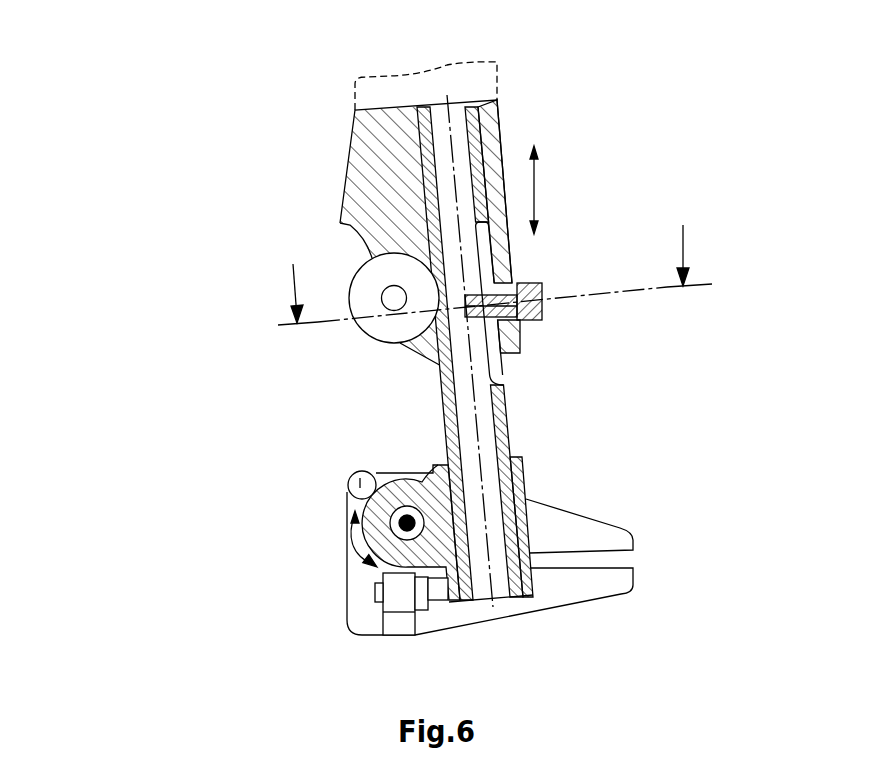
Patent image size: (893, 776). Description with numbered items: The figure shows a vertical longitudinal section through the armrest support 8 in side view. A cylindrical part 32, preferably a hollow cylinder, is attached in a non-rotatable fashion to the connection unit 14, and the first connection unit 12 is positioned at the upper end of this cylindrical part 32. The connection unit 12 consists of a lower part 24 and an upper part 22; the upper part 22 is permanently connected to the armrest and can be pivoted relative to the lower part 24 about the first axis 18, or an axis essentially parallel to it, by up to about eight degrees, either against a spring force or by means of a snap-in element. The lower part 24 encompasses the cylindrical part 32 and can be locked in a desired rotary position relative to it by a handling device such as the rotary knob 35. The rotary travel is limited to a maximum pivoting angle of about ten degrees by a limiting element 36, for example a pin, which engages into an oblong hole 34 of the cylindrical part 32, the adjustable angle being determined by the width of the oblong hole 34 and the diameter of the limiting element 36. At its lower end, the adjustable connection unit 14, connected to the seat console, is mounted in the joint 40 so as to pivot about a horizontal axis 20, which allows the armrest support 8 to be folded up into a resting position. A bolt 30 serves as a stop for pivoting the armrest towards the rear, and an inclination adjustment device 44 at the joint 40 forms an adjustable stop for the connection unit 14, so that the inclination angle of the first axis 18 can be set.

The armrest support 8 is at (397, 367).
The first connection unit 12 is at (411, 327).
The connection unit 14 is at (558, 530).
The first axis 18 is at (453, 163).
The horizontal axis 20 is at (405, 524).
The upper part 22 is at (483, 77).
The lower part 24 is at (399, 191).
The bolt 30 is at (350, 476).
The cylindrical part 32 is at (508, 418).
The oblong hole 34 is at (478, 240).
The rotary knob 35 is at (352, 320).
The limiting element 36 is at (544, 287).
The joint 40 is at (378, 548).
The inclination adjustment device 44 is at (433, 620).